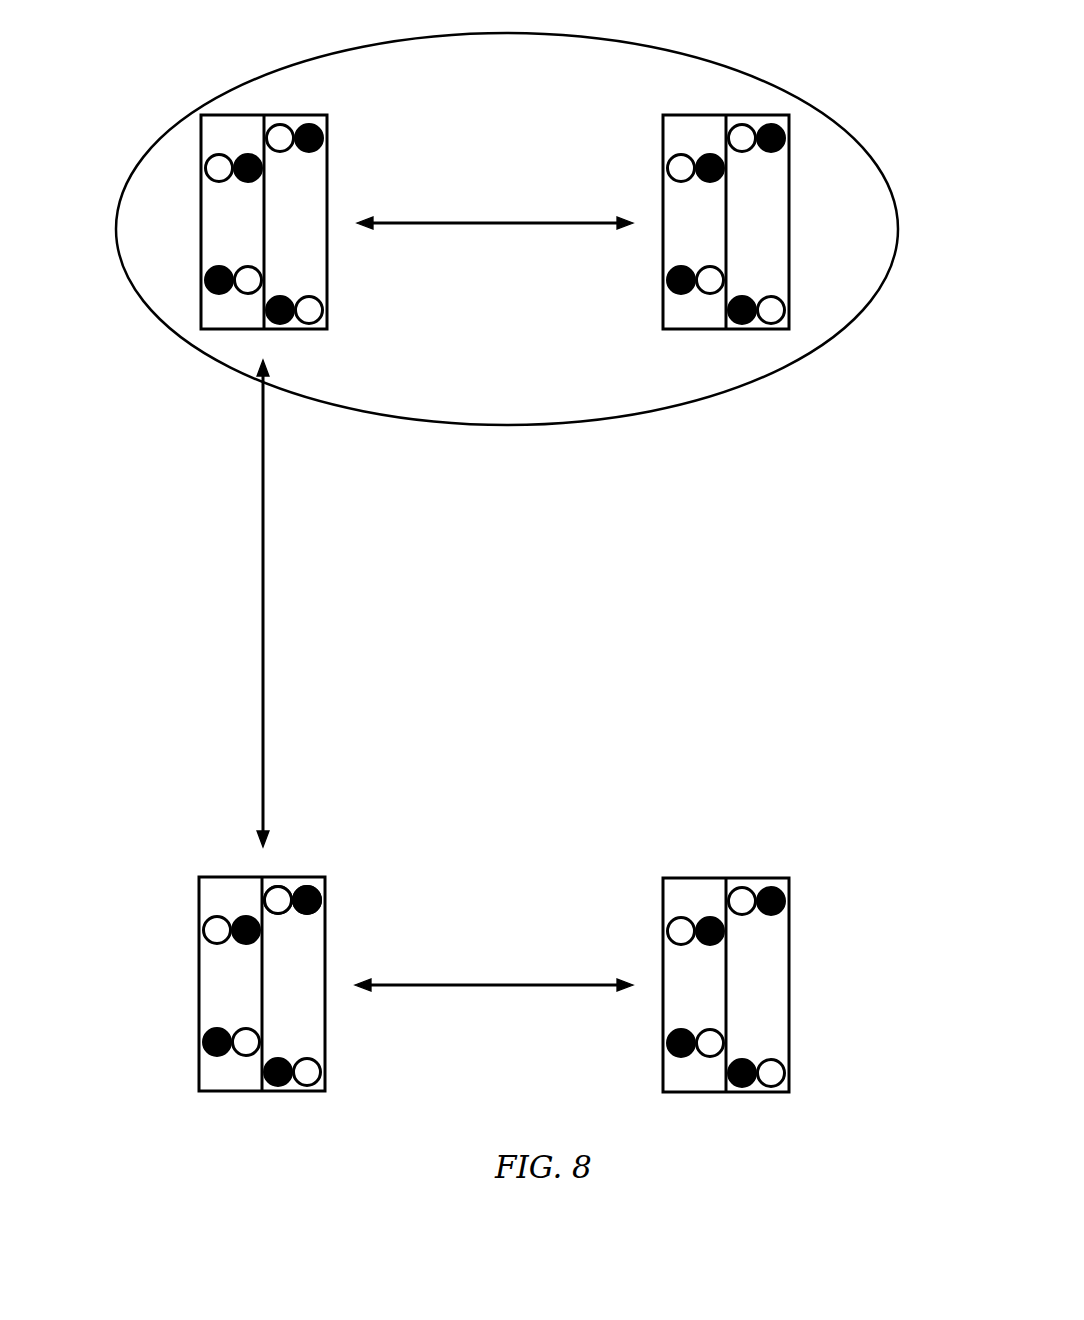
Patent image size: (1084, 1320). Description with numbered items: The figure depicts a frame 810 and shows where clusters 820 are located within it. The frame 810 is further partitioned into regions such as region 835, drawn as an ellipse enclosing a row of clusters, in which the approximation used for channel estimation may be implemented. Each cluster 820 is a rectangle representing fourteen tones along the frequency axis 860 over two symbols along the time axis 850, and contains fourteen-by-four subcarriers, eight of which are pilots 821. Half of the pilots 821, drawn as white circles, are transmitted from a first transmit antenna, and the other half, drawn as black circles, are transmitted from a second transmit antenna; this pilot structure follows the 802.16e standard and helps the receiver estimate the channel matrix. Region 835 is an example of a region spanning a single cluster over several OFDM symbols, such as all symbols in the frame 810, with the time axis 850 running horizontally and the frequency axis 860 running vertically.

The frame 810 is at (494, 893).
The cluster 820 is at (317, 985).
The pilot 821 is at (278, 907).
The region 835 is at (633, 413).
The time axis 850 is at (480, 225).
The frequency axis 860 is at (263, 450).